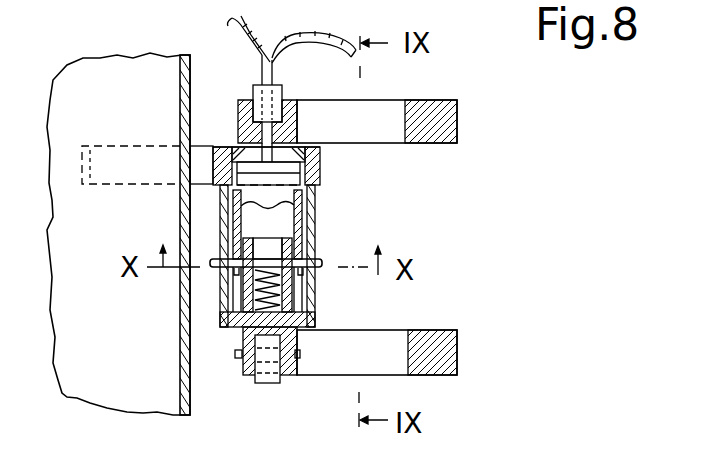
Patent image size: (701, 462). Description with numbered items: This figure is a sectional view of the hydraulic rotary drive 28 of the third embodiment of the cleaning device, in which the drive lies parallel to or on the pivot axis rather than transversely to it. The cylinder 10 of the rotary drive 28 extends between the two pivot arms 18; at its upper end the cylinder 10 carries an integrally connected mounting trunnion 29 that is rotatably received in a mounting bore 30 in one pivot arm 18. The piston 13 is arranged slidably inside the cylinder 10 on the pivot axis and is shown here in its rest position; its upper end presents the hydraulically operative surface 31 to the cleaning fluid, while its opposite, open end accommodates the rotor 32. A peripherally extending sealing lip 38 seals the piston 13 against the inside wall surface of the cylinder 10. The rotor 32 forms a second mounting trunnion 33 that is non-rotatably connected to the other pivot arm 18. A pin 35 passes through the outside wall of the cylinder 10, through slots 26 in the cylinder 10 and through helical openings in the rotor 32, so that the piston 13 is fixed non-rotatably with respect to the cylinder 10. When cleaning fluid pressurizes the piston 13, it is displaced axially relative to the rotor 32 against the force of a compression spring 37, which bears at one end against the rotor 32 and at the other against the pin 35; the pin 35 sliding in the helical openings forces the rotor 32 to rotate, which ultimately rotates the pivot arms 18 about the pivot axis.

The cylinder 10 is at (313, 192).
The piston 13 is at (250, 213).
The pivot arms 18 is at (458, 143).
The slots 26 is at (222, 293).
The hydraulic rotary drive 28 is at (320, 215).
The mounting trunnion 29 is at (262, 105).
The mounting bore 30 is at (280, 108).
The hydraulically operative surface 31 is at (302, 147).
The rotor 32 is at (292, 296).
The second mounting trunnion 33 is at (263, 385).
The pin 35 is at (320, 264).
The compression spring 37 is at (218, 292).
The sealing lip 38 is at (228, 147).